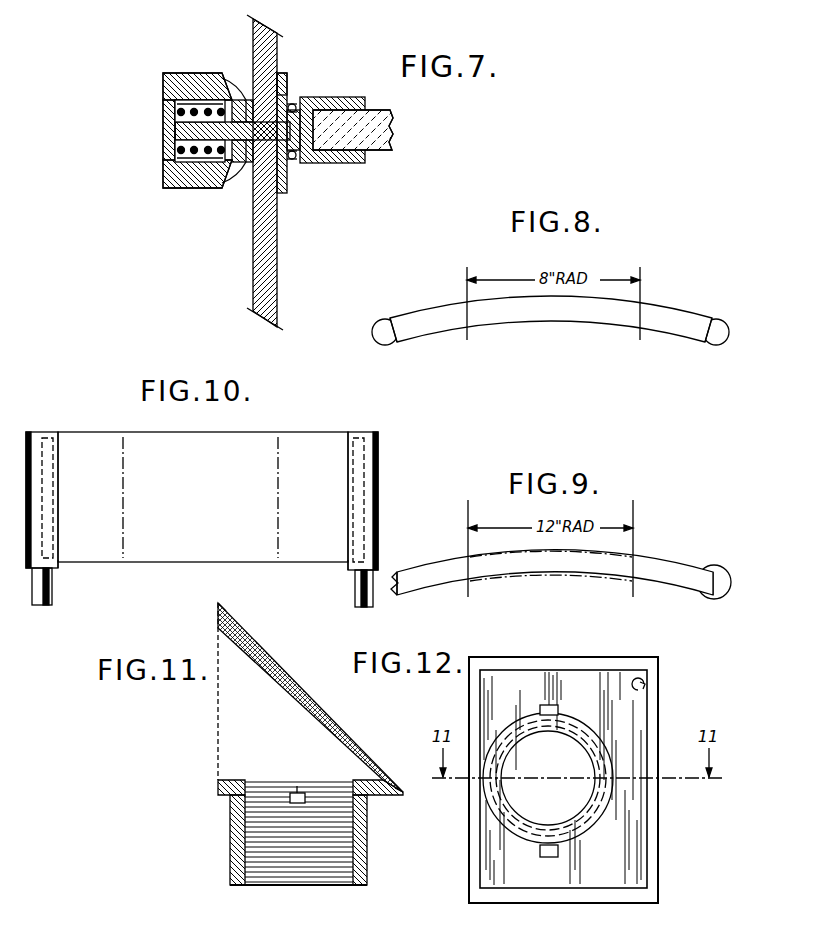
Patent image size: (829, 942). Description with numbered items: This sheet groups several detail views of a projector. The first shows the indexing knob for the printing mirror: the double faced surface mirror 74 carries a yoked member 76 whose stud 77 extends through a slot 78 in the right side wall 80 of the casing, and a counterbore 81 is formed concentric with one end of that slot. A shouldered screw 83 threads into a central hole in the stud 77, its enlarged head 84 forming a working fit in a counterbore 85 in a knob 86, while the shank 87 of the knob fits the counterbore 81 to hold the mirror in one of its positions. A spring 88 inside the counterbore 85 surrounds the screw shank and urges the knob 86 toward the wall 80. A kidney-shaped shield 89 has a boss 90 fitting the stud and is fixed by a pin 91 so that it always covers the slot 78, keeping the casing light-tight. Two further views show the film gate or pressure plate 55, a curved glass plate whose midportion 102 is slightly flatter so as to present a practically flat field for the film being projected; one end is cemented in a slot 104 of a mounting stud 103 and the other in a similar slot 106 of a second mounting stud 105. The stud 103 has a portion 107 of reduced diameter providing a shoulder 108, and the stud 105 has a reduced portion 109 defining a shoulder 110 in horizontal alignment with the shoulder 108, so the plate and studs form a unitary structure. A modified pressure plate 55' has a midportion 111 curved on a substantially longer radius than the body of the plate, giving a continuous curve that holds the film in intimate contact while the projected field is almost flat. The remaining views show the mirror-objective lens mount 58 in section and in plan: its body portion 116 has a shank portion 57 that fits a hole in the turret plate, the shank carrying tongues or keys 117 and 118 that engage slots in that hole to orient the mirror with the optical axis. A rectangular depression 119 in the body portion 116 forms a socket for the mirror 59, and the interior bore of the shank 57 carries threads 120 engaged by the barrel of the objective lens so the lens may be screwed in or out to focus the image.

In FIG. 7, the double faced surface mirror 74 is at (395, 130).
In FIG. 7, the yoked member 76 is at (340, 163).
In FIG. 7, the stud 77 is at (286, 190).
In FIG. 7, the slot 78 is at (240, 164).
In FIG. 7, the right side wall 80 is at (277, 245).
In FIG. 7, the counterbore 81 is at (244, 92).
In FIG. 7, the shouldered screw 83 is at (220, 186).
In FIG. 7, the enlarged head 84 is at (178, 112).
In FIG. 7, the counterbore 85 is at (178, 152).
In FIG. 7, the knob 86 is at (186, 74).
In FIG. 7, the shank 87 is at (236, 98).
In FIG. 7, the spring 88 is at (165, 90).
In FIG. 7, the kidney-shaped shield 89 is at (285, 76).
In FIG. 7, the boss 90 is at (296, 160).
In FIG. 7, the pin 91 is at (296, 104).
In FIG. 8, the film gate or pressure plate 55 is at (554, 319).
In FIG. 10, the film gate or pressure plate 55 is at (231, 508).
In FIG. 9, the modified pressure plate 55' is at (588, 571).
In FIG. 8, the midportion 102 is at (560, 297).
In FIG. 9, the midportion 102 is at (555, 572).
In FIG. 10, the midportion 102 is at (202, 466).
In FIG. 8, the mounting stud 103 is at (720, 346).
In FIG. 9, the mounting stud 103 is at (733, 575).
In FIG. 10, the mounting stud 103 is at (378, 452).
In FIG. 8, the slot 104 is at (720, 323).
In FIG. 9, the slot 104 is at (722, 596).
In FIG. 10, the slot 104 is at (366, 460).
In FIG. 8, the second mounting stud 105 is at (383, 346).
In FIG. 9, the second mounting stud 105 is at (408, 596).
In FIG. 10, the second mounting stud 105 is at (22, 434).
In FIG. 8, the slot 106 is at (385, 322).
In FIG. 9, the slot 106 is at (402, 574).
In FIG. 10, the slot 106 is at (50, 436).
In FIG. 10, the portion of reduced diameter 107 is at (354, 600).
In FIG. 10, the shoulder 108 is at (346, 570).
In FIG. 10, the portion of reduced diameter 109 is at (52, 598).
In FIG. 10, the shoulder 110 is at (60, 566).
In FIG. 9, the midportion 111 is at (552, 552).
In FIG. 11, the shank portion 57 is at (230, 843).
In FIG. 11, the mirror-objective lens mount 58 is at (294, 697).
In FIG. 12, the mirror-objective lens mount 58 is at (589, 780).
In FIG. 11, the mirror 59 is at (355, 750).
In FIG. 12, the mirror 59 is at (640, 815).
In FIG. 11, the body portion 116 is at (390, 796).
In FIG. 12, the body portion 116 is at (647, 858).
In FIG. 12, the tongue or key 117 is at (558, 850).
In FIG. 11, the tongue or key 118 is at (300, 784).
In FIG. 12, the tongue or key 118 is at (540, 708).
In FIG. 11, the rectangular depression 119 is at (216, 608).
In FIG. 12, the rectangular depression 119 is at (646, 686).
In FIG. 11, the threads 120 is at (262, 874).